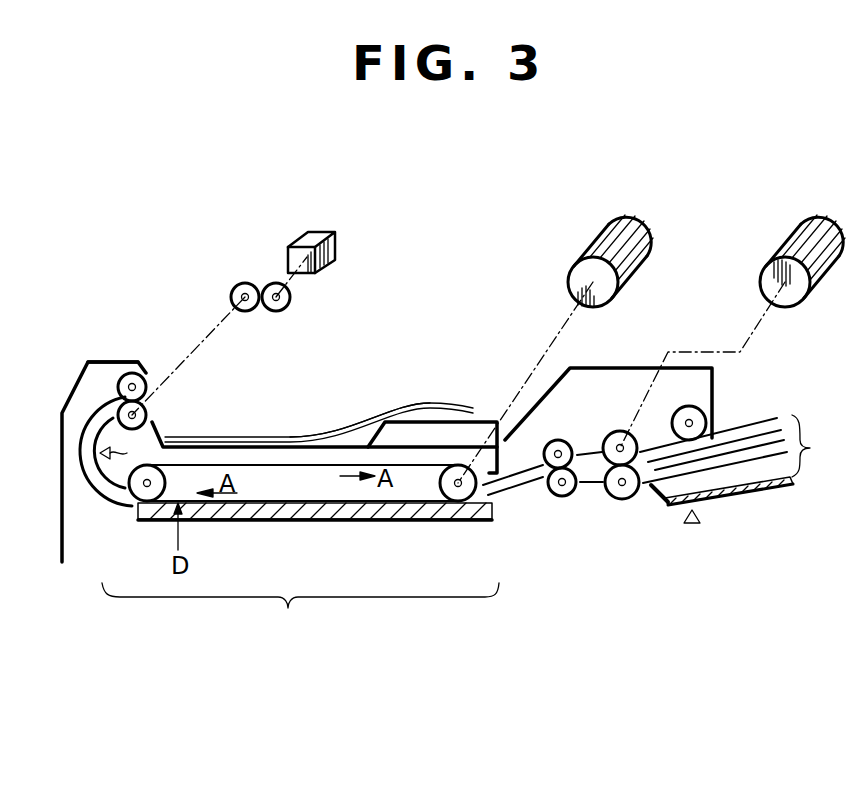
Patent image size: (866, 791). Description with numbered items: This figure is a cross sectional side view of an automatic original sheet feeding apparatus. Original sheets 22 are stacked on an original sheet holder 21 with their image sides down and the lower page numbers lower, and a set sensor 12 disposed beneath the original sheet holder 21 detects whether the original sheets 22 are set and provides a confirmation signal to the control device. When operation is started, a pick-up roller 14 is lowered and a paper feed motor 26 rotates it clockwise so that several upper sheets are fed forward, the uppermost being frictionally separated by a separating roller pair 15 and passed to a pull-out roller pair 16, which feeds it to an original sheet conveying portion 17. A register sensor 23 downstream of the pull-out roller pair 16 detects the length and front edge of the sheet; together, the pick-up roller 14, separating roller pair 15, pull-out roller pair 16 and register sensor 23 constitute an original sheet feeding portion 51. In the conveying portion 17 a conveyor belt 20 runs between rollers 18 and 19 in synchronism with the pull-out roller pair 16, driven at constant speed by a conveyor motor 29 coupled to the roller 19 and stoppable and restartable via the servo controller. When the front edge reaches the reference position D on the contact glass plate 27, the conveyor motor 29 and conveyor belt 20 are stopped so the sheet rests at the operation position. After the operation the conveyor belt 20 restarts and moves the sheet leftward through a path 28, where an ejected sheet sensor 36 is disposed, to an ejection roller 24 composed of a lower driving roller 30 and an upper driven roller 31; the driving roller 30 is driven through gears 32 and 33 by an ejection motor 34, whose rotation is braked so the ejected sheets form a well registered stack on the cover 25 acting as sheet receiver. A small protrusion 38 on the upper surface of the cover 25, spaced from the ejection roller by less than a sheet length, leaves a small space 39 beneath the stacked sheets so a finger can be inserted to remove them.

The set sensor 12 is at (692, 523).
The pick-up roller 14 is at (700, 410).
The separating roller pair 15 is at (618, 428).
The pull-out roller pair 16 is at (565, 507).
The original sheet conveying portion 17 is at (300, 608).
The roller 18 is at (140, 492).
The roller 19 is at (458, 493).
The conveyor belt 20 is at (263, 465).
The original sheet holder 21 is at (748, 503).
The original sheets 22 is at (744, 449).
The register sensor 23 is at (513, 463).
The ejection roller 24 is at (120, 355).
The cover 25 is at (278, 445).
The paper feed motor 26 is at (817, 218).
The contact glass plate 27 is at (294, 520).
The path 28 is at (82, 427).
The conveyor motor 29 is at (620, 218).
The driving roller 30 is at (148, 413).
The driven roller 31 is at (148, 376).
The gear 32 is at (245, 282).
The gear 33 is at (292, 300).
The ejection motor 34 is at (313, 232).
The ejected sheet sensor 36 is at (130, 454).
The protrusion 38 is at (436, 432).
The space 39 is at (354, 420).
The original sheet feeding portion 51 is at (639, 348).